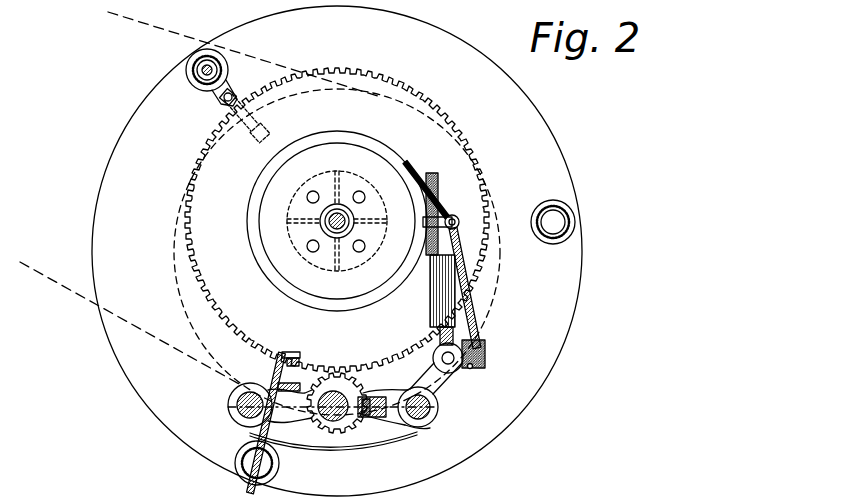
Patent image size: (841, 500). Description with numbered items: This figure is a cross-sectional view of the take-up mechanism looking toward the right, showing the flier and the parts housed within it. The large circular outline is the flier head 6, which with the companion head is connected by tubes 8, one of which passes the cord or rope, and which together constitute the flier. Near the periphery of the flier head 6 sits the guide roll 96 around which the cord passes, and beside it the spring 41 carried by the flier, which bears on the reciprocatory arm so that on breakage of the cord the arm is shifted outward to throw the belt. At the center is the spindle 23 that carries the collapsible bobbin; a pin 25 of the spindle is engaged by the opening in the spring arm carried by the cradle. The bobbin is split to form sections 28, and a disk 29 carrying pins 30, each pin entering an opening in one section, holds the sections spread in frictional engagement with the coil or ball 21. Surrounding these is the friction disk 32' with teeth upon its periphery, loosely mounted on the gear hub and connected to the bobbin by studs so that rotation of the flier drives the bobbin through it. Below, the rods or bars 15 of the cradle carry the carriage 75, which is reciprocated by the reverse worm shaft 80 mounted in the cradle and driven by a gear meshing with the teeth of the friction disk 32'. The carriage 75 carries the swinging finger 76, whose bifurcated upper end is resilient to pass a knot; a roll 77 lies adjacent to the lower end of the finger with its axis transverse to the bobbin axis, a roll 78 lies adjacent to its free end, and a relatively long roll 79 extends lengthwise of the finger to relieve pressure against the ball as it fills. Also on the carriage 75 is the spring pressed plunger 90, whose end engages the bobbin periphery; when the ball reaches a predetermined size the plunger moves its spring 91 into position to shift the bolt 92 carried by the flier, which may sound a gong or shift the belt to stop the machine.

The flier head 6 is at (337, 251).
The tubes 8 is at (565, 215).
The rods or bars 15 is at (437, 423).
The coil or ball 21 is at (363, 152).
The spindle 23 is at (346, 226).
The pin 25 is at (330, 226).
The sections 28 is at (337, 221).
The disk 29 is at (372, 150).
The pins 30 is at (363, 192).
The friction disk 32' is at (337, 220).
The spring 41 is at (254, 143).
The carriage 75 is at (445, 384).
The swinging finger 76 is at (450, 240).
The roll 77 is at (483, 344).
The roll 78 is at (456, 215).
The roll 79 is at (434, 298).
The reverse worm shaft 80 is at (364, 437).
The spring pressed plunger 90 is at (300, 362).
The spring 91 is at (312, 448).
The bolt 92 is at (272, 468).
The guide roll 96 is at (225, 63).